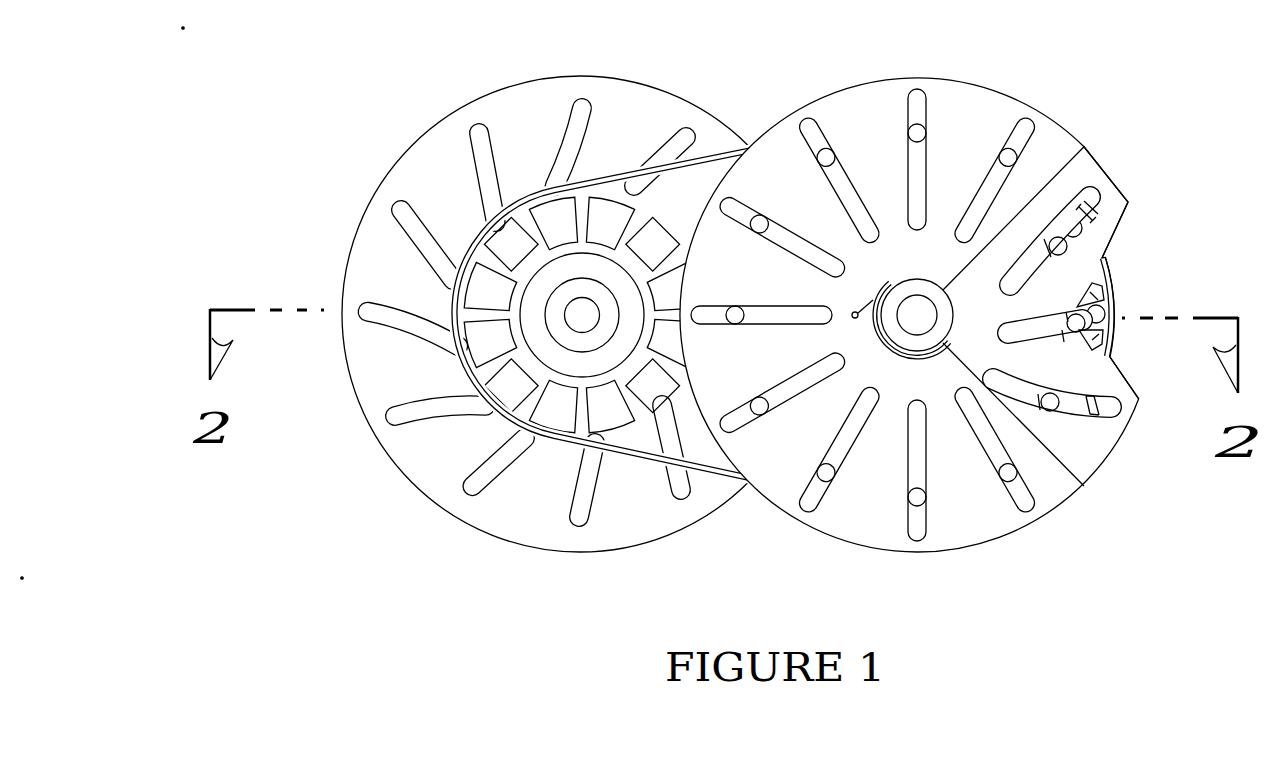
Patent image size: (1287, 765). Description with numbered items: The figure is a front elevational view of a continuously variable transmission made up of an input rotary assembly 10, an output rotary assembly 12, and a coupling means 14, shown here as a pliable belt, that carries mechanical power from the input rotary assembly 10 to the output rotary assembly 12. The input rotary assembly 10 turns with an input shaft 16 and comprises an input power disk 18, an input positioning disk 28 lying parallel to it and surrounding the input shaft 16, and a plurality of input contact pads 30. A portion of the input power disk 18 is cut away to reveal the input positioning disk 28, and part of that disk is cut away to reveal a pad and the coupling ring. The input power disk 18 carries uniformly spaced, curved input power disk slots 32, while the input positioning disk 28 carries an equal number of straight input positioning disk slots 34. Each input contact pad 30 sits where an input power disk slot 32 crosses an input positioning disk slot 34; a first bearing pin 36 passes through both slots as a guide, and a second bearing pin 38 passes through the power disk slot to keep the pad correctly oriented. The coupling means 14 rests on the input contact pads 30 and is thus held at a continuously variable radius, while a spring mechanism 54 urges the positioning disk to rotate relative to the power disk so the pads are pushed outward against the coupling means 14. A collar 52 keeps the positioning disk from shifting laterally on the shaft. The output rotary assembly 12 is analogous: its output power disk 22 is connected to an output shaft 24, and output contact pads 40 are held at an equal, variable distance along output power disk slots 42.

The input rotary assembly 10 is at (955, 59).
The output rotary assembly 12 is at (635, 57).
The coupling means 14 is at (582, 176).
The input shaft 16 is at (917, 315).
The input power disk 18 is at (1041, 316).
The output power disk 22 is at (527, 319).
The output shaft 24 is at (582, 315).
The input positioning disk 28 is at (868, 325).
The input contact pads 30 is at (1096, 288).
The input power disk slots 32 is at (1015, 280).
The input positioning disk slots 34 is at (991, 170).
The first bearing pin 36 is at (1001, 154).
The second bearing pin 38 is at (1050, 247).
The output contact pads 40 is at (582, 315).
The output power disk slots 42 is at (475, 179).
The collar 52 is at (956, 323).
The spring mechanism 54 is at (895, 280).